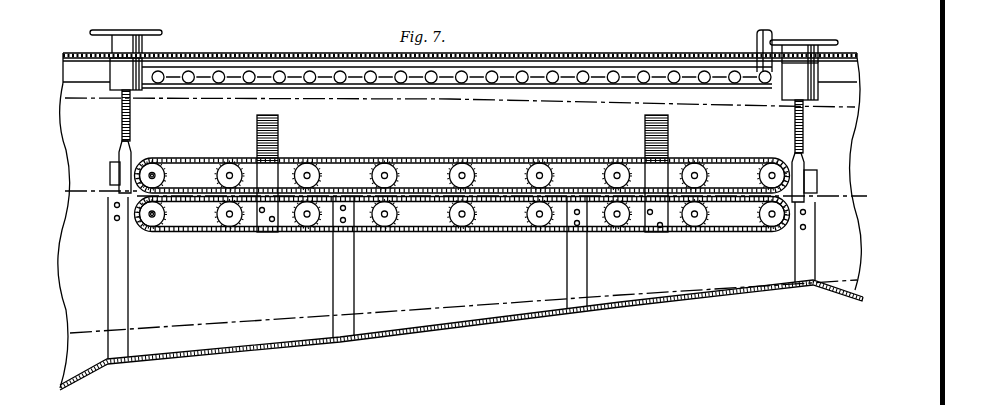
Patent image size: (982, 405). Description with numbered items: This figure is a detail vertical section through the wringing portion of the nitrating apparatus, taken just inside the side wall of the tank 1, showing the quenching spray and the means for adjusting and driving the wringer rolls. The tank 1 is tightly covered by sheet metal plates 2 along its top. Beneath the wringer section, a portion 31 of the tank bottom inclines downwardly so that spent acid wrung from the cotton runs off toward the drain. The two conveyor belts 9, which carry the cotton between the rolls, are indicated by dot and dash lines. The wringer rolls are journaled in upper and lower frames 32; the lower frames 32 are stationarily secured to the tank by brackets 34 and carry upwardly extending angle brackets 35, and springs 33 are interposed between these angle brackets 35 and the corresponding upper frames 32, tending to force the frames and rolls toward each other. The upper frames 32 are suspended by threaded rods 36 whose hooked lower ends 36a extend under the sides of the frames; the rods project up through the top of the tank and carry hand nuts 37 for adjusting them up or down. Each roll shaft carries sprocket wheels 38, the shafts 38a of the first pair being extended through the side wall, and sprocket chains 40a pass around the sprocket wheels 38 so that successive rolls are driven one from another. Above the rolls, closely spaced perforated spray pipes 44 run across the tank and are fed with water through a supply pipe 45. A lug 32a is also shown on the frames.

The tank 1 is at (843, 182).
The sheet metal plates 2 is at (513, 59).
The conveyor belts 9 is at (494, 101).
The inclined bottom portion 31 is at (447, 320).
The frames 32 is at (132, 222).
The bracket lug 32a is at (115, 163).
The springs 33 is at (281, 128).
The brackets 34 is at (127, 301).
The angle brackets 35 is at (280, 119).
The threaded rods 36 is at (122, 127).
The hooked lower ends 36a is at (125, 183).
The hand nuts 37 is at (464, 58).
The sprocket wheels 38 is at (153, 163).
The shafts 38a is at (163, 175).
The sprocket chains 40a is at (220, 162).
The spray pipes 44 is at (337, 68).
The supply pipe 45 is at (230, 70).